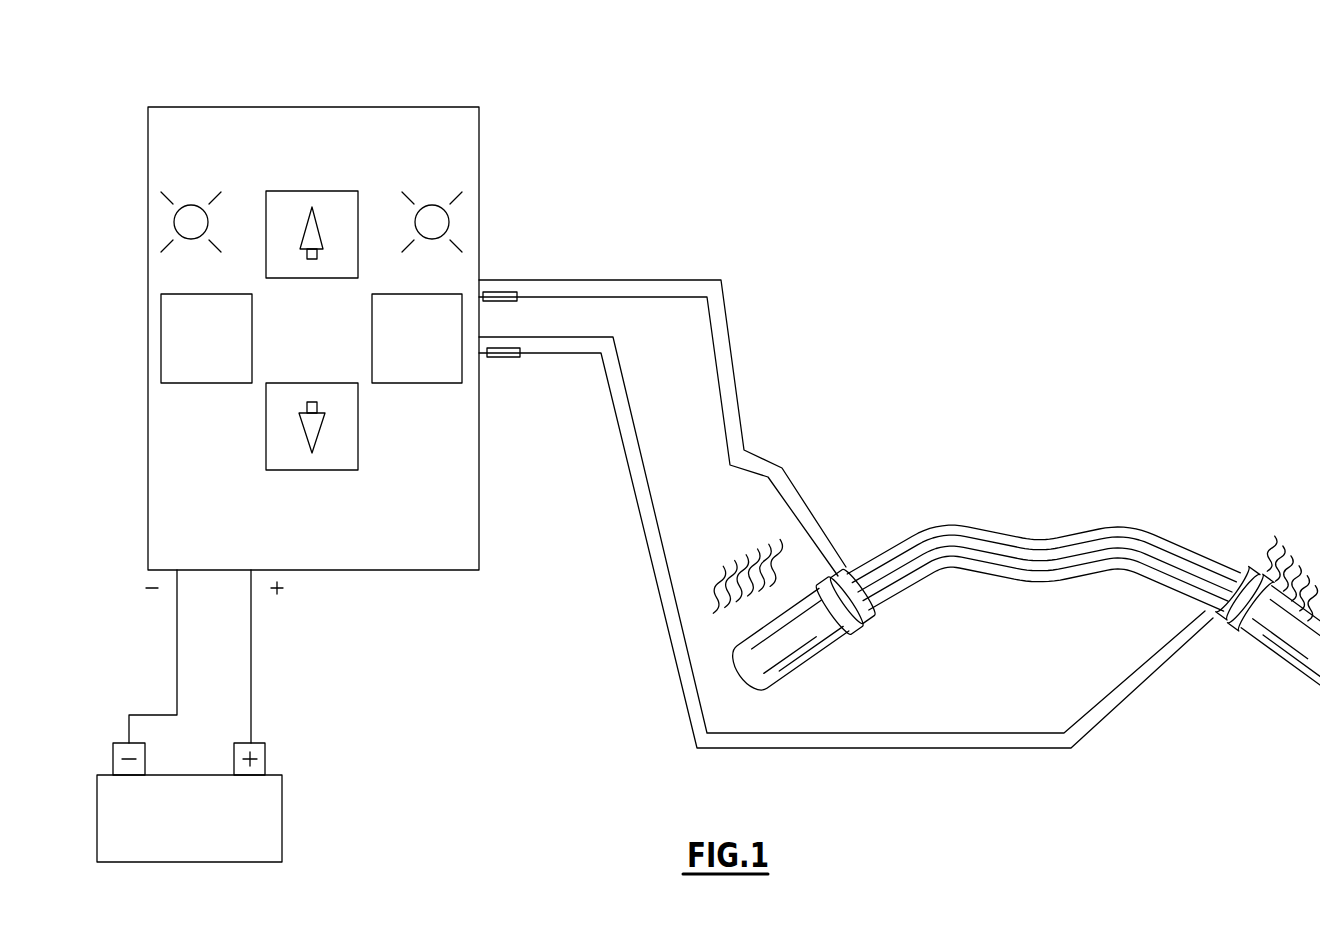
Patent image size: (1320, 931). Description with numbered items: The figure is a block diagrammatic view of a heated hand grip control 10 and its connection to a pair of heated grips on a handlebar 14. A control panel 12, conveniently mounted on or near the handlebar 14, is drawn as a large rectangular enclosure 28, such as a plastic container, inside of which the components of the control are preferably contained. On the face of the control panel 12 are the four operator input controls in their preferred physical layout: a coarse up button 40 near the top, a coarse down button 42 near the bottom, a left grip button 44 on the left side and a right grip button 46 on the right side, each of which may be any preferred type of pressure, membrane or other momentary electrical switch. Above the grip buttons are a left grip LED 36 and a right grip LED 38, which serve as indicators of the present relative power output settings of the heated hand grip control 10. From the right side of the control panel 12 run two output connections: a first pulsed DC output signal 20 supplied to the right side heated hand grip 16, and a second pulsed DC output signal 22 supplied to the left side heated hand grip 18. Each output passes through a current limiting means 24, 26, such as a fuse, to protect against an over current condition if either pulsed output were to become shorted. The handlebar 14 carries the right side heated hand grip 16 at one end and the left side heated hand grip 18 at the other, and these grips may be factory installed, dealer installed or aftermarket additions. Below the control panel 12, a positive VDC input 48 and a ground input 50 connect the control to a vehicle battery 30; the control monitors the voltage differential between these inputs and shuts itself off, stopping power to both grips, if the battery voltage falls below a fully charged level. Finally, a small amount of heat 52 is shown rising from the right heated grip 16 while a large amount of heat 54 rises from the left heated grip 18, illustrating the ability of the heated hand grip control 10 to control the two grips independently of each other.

The heated hand grip control 10 is at (350, 298).
The control panel 12 is at (488, 247).
The handlebar 14 is at (1047, 585).
The right side heated hand grip 16 is at (1278, 667).
The left side heated hand grip 18 is at (828, 647).
The first pulsed DC output signal 20 is at (535, 337).
The second pulsed DC output signal 22 is at (560, 280).
The current limiting means 24 is at (500, 358).
The current limiting means 26 is at (503, 301).
The enclosure 28 is at (405, 571).
The battery 30 is at (282, 800).
The left grip LED 36 is at (174, 223).
The right grip LED 38 is at (452, 211).
The coarse up button 40 is at (265, 244).
The coarse down button 42 is at (266, 441).
The left grip button 44 is at (161, 358).
The right grip button 46 is at (412, 383).
The positive VDC input 48 is at (251, 645).
The ground input 50 is at (177, 630).
The small amount of heat 52 is at (1264, 544).
The large amount of heat 54 is at (737, 538).